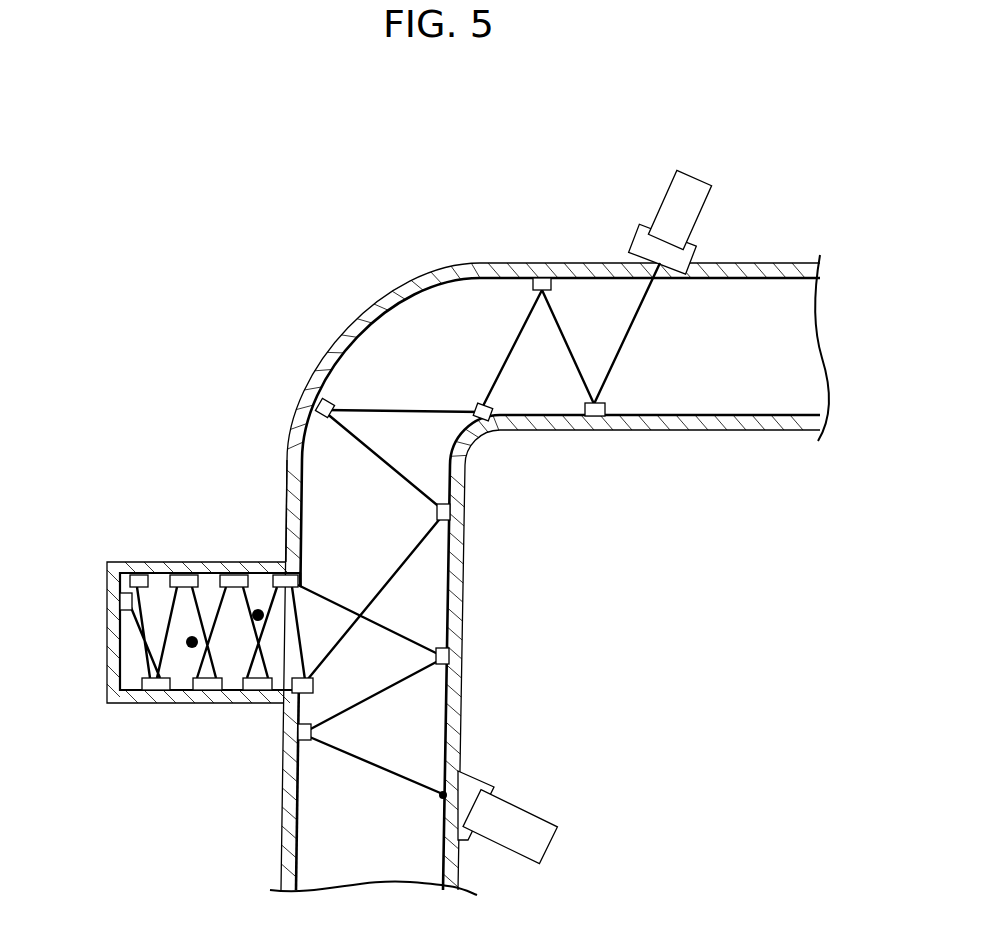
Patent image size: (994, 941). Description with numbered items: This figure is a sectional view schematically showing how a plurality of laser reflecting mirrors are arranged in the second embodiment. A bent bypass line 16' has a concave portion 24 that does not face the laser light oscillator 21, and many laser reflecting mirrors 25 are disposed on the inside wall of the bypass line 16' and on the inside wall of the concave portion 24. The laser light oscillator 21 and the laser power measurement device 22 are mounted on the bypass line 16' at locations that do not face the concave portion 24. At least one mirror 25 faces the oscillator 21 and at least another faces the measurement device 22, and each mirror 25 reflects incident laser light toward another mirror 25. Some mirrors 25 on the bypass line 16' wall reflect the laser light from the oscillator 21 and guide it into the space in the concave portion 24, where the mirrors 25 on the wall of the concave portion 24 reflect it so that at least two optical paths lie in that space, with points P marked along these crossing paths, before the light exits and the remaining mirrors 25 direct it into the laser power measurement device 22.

The bypass line 16' is at (549, 555).
The laser light oscillator 21 is at (666, 190).
The laser power measurement device 22 is at (536, 818).
The concave portion 24 is at (158, 562).
The laser reflecting mirror 25 is at (336, 484).
The measurement point P is at (188, 650).